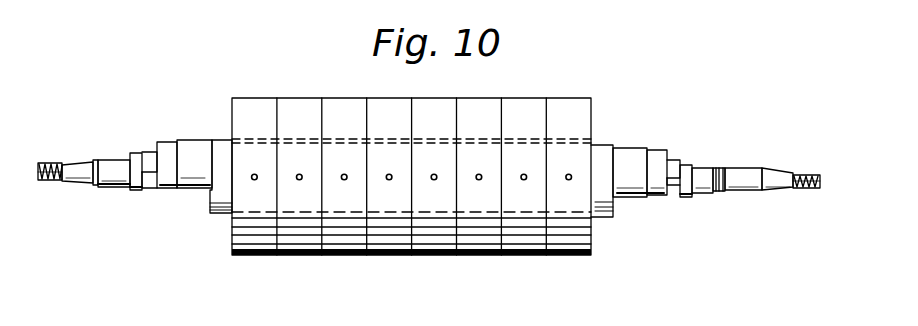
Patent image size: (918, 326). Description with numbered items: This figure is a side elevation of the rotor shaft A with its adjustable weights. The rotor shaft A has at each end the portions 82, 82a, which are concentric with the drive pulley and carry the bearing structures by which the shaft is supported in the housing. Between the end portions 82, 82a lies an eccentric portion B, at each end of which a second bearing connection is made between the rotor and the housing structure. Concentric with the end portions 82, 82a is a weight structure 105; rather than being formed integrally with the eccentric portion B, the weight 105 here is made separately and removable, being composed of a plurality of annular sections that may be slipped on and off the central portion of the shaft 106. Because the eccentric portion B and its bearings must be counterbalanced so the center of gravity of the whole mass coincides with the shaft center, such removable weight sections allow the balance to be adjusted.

The rotor shaft A is at (753, 165).
The eccentric portion B is at (190, 152).
The end portion 82 is at (707, 170).
The end portion 82a is at (120, 186).
The weight structure 105 is at (308, 275).
The central portion of the shaft 106 is at (220, 213).